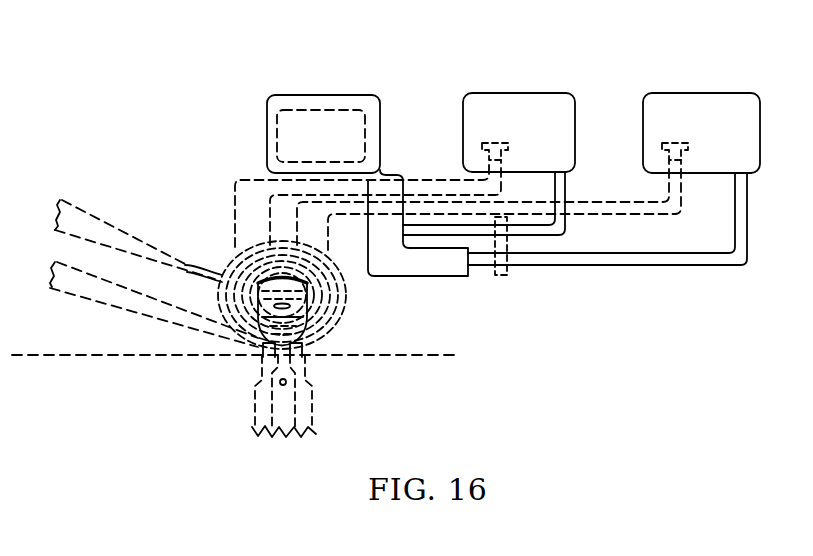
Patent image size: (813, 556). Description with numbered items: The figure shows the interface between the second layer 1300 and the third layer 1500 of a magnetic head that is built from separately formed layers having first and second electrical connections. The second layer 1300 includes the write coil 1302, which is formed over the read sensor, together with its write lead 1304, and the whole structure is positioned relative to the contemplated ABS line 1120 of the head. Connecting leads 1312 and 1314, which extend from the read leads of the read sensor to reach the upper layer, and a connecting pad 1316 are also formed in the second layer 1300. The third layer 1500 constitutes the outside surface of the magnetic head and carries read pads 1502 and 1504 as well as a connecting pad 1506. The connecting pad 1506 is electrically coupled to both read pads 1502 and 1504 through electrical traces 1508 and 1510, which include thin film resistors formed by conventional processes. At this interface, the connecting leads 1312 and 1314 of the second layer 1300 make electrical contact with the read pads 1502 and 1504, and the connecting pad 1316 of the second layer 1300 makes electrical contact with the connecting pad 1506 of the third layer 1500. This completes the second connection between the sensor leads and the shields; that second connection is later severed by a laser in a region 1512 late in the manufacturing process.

The second layer 1300 is at (150, 106).
The write coil 1302 is at (346, 304).
The write lead 1304 is at (87, 223).
The ABS line 1120 is at (92, 354).
The third layer 1500 is at (634, 44).
The read pad 1502 is at (494, 102).
The read pad 1504 is at (715, 102).
The connecting pad 1506 is at (318, 102).
The electrical trace 1508 is at (565, 228).
The electrical trace 1510 is at (657, 262).
The region 1512 is at (500, 276).
The connecting lead 1312 is at (496, 140).
The connecting lead 1314 is at (672, 140).
The connecting pad 1316 is at (340, 137).